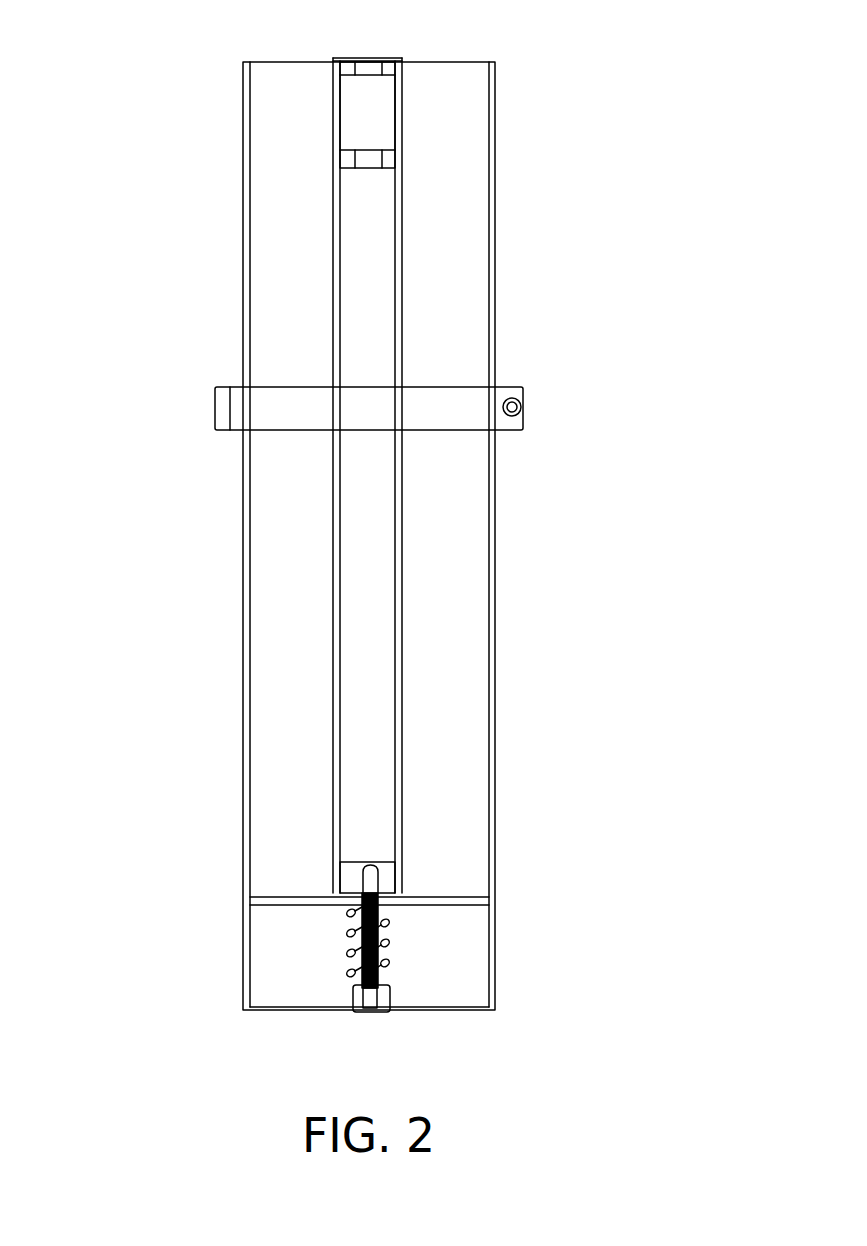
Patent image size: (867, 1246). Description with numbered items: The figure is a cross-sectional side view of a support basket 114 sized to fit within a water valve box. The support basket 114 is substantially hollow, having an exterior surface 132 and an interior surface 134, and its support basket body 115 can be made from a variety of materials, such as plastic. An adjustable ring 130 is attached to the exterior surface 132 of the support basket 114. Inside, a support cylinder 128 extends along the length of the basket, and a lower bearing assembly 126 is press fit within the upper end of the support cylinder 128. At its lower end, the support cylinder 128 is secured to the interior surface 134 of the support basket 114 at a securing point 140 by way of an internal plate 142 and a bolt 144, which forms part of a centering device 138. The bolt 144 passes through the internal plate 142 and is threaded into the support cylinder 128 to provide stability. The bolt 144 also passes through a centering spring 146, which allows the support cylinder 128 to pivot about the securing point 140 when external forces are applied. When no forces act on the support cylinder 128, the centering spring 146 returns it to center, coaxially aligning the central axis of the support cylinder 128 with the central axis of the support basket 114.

The support basket 114 is at (417, 508).
The support basket body 115 is at (261, 536).
The lower bearing assembly 126 is at (388, 107).
The support cylinder 128 is at (371, 604).
The adjustable ring 130 is at (216, 390).
The exterior surface 132 is at (243, 213).
The interior surface 134 is at (287, 550).
The centering device 138 is at (374, 952).
The securing point 140 is at (350, 894).
The internal plate 142 is at (478, 900).
The bolt 144 is at (388, 997).
The centering spring 146 is at (345, 955).